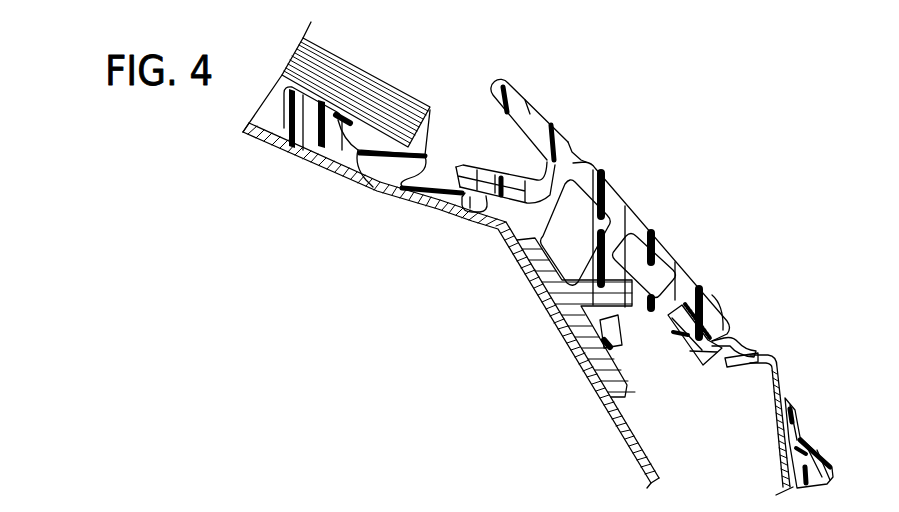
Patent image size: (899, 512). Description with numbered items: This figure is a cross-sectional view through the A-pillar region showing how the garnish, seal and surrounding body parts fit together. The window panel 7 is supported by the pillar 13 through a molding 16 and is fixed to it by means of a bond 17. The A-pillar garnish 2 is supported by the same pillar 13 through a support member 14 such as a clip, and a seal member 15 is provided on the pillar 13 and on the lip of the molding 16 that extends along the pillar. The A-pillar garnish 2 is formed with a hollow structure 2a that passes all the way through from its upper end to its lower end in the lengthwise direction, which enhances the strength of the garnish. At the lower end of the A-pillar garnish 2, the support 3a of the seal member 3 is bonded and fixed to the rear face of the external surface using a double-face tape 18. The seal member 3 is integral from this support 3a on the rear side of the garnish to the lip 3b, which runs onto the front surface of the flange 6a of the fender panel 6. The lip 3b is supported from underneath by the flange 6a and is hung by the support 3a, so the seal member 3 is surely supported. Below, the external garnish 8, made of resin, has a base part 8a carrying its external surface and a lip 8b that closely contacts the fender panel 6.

The A-pillar garnish 2 is at (606, 210).
The hollow structure 2a is at (645, 278).
The seal member 3 is at (734, 341).
The support 3a is at (673, 327).
The lip 3b is at (737, 340).
The fender panel 6 is at (775, 405).
The flange 6a is at (743, 368).
The window panel 7 is at (360, 88).
The external garnish 8 is at (841, 428).
The base part 8a is at (833, 472).
The lip 8b is at (788, 405).
The pillar 13 is at (607, 405).
The support member 14 is at (568, 312).
The seal member 15 is at (480, 198).
The molding 16 is at (375, 162).
The bond 17 is at (297, 123).
The double-face tape 18 is at (713, 305).